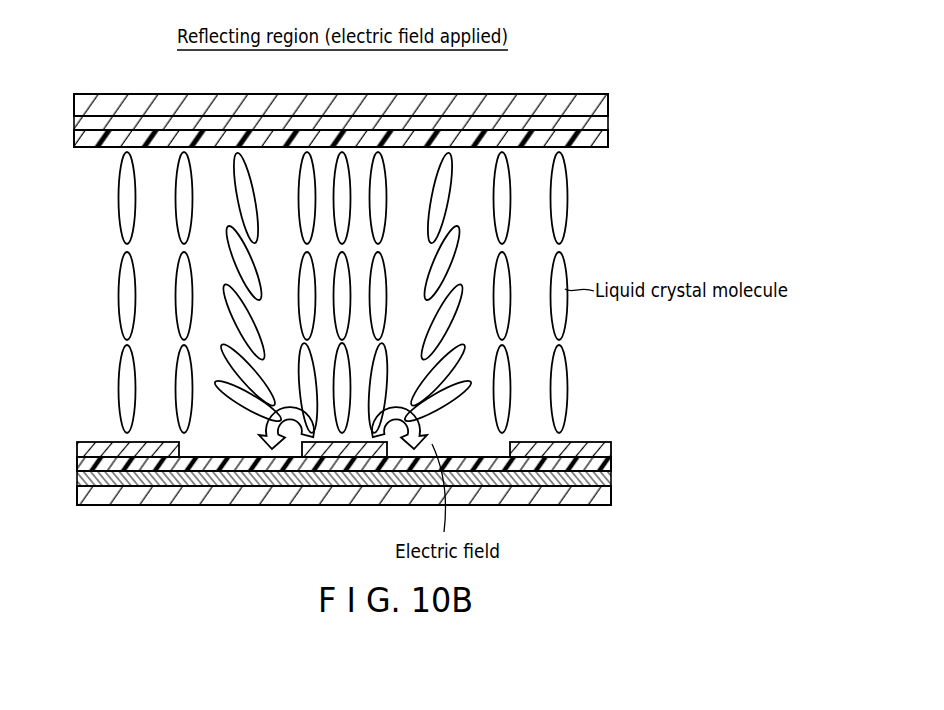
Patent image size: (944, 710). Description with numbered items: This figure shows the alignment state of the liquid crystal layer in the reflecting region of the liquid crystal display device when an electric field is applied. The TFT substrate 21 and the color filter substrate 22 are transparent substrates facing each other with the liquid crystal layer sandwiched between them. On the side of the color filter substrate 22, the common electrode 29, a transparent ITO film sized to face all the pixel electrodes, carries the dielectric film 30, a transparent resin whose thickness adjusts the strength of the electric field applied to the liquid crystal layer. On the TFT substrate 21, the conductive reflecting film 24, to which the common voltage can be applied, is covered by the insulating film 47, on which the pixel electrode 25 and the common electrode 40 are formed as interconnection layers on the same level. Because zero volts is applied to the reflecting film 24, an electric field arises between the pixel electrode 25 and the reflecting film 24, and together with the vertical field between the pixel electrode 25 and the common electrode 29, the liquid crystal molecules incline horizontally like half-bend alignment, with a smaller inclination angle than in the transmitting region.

The TFT substrate 21 is at (611, 497).
The color filter substrate 22 is at (608, 103).
The reflecting film 24 is at (611, 480).
The pixel electrode 25 is at (315, 450).
The common electrode 29 is at (608, 125).
The dielectric film 30 is at (608, 147).
The common electrode 40 is at (77, 446).
The insulating film 47 is at (606, 463).